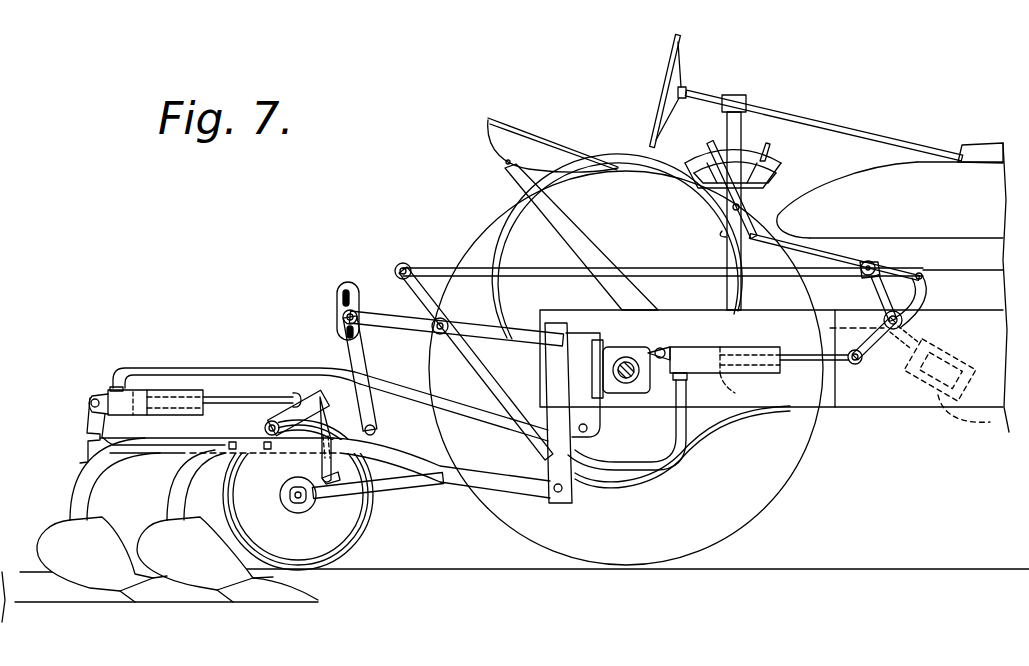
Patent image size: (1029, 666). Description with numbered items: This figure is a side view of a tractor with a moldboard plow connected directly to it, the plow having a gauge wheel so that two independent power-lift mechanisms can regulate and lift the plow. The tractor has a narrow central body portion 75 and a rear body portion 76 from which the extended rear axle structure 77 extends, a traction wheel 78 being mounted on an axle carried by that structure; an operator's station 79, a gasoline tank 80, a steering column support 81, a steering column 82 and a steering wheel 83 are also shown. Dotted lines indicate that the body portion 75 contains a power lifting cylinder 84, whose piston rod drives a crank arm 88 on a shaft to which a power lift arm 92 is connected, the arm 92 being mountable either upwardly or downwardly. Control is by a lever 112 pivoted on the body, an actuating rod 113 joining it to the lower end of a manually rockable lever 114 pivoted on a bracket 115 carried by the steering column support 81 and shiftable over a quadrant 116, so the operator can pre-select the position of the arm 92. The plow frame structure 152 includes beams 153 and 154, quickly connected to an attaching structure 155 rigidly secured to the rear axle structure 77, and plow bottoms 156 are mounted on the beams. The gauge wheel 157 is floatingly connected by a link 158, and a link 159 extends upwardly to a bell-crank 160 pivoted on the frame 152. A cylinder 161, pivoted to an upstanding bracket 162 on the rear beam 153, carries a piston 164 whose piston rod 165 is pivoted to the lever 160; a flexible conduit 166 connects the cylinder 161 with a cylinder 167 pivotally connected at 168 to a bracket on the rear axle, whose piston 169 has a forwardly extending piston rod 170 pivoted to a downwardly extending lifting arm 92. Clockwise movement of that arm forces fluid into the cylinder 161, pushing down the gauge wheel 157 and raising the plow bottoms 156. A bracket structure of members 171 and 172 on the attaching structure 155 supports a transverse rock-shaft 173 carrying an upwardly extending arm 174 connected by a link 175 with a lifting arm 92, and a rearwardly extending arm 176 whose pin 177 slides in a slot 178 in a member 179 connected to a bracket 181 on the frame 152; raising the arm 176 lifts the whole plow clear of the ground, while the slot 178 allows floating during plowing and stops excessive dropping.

The central body portion 75 is at (919, 407).
The rear body portion 76 is at (698, 408).
The rear axle structure 77 is at (638, 395).
The traction wheel 78 is at (740, 512).
The operator's station 79 is at (522, 140).
The gasoline tank 80 is at (918, 180).
The steering column support 81 is at (743, 292).
The steering column 82 is at (835, 126).
The steering wheel 83 is at (681, 35).
The power lifting cylinder 84 is at (947, 389).
The crank arm 88 is at (830, 328).
The power lift arm 92 is at (878, 290).
The lever 112 is at (922, 292).
The actuating rod 113 is at (820, 250).
The manually rockable lever 114 is at (690, 155).
The bracket 115 is at (700, 185).
The quadrant 116 is at (711, 142).
The frame structure 152 is at (80, 472).
The plow beam 153 is at (70, 493).
The plow beam 154 is at (170, 492).
The attaching structure 155 is at (580, 470).
The plow bottom 156 is at (100, 575).
The gauge wheel 157 is at (362, 539).
The link 158 is at (398, 488).
The link 159 is at (322, 462).
The bell-crank 160 is at (313, 410).
The cylinder 161 is at (175, 390).
The upstanding bracket 162 is at (88, 428).
The piston 164 is at (133, 385).
The piston rod 165 is at (222, 397).
The flexible conduit 166 is at (152, 368).
The cylinder 167 is at (705, 347).
The pivotal connection 168 is at (660, 348).
The piston 169 is at (748, 390).
The piston rod 170 is at (798, 375).
The bracket member 171 is at (476, 328).
The bracket member 172 is at (477, 366).
The transverse rock-shaft 173 is at (420, 322).
The upwardly extending arm 174 is at (392, 270).
The link 175 is at (500, 270).
The rearwardly extending arm 176 is at (402, 326).
The pin 177 is at (343, 317).
The slot 178 is at (338, 295).
The slotted member 179 is at (338, 288).
The bracket 181 is at (432, 420).